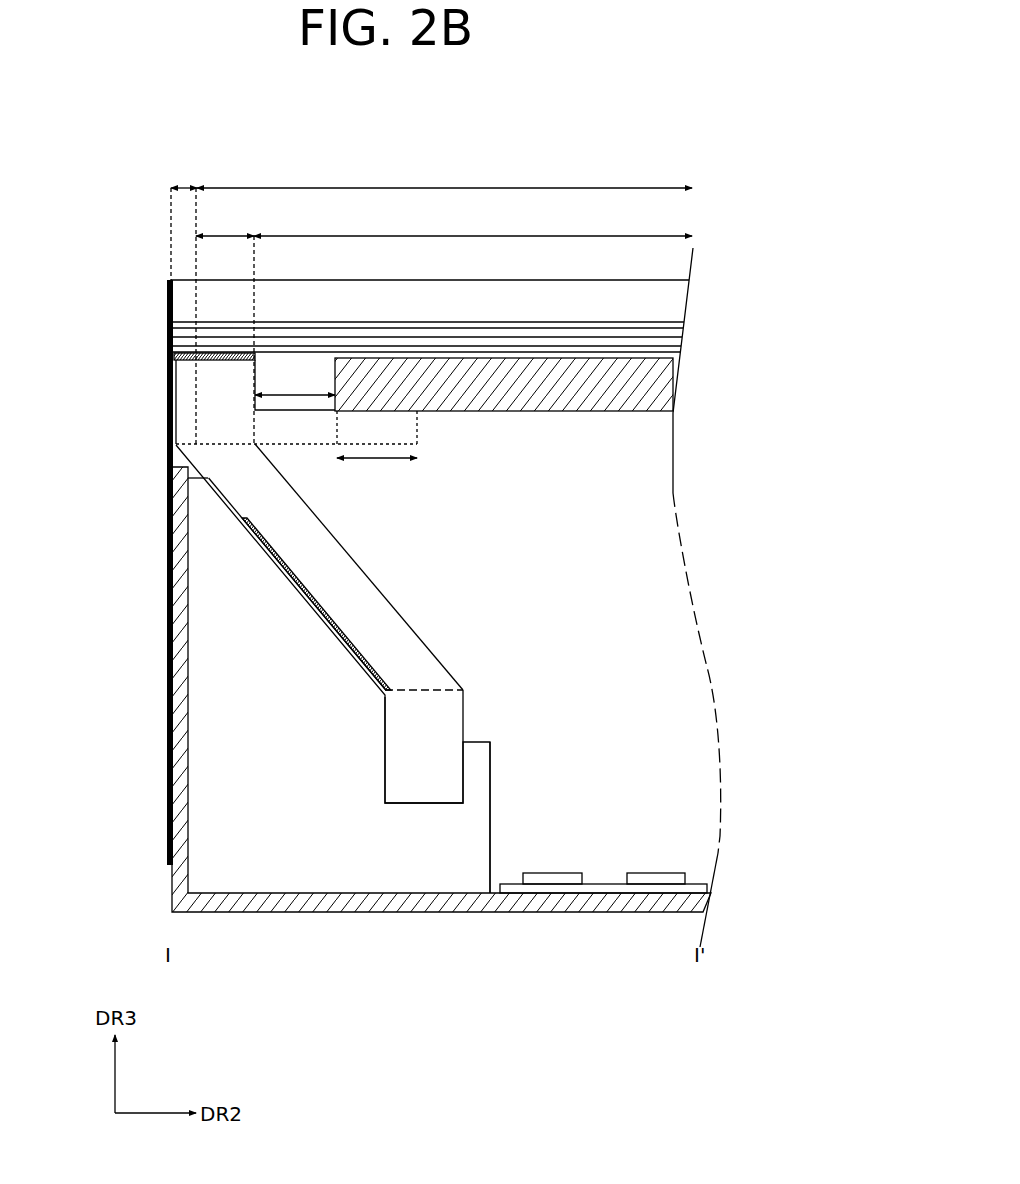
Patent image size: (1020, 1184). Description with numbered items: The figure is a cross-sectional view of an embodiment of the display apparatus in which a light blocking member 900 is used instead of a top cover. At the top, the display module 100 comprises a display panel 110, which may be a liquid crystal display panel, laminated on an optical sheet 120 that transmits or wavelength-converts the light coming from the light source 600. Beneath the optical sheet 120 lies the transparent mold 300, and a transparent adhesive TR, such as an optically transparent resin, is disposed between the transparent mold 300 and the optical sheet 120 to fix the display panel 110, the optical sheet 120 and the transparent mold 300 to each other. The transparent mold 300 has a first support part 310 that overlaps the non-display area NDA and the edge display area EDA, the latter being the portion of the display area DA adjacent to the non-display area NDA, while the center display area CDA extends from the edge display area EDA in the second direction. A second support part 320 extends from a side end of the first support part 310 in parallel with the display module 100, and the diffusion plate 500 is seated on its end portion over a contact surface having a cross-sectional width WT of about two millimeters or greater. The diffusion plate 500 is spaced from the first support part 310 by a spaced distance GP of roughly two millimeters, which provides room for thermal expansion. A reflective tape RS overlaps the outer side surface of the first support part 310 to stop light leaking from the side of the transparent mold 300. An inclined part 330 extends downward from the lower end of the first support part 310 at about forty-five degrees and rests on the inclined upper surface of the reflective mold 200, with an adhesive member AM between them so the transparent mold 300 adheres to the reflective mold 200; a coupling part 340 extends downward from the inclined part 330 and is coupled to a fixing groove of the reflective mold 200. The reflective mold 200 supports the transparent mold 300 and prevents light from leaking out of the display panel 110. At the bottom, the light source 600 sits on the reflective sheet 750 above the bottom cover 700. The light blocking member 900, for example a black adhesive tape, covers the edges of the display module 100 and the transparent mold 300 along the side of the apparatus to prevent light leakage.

The display module 100 is at (472, 321).
The display panel 110 is at (690, 302).
The optical sheet 120 is at (445, 343).
The transparent adhesive TR is at (167, 335).
The reflective tape RS is at (168, 362).
The diffusion plate 500 is at (672, 385).
The light blocking member 900 is at (165, 298).
The transparent mold 300 is at (90, 380).
The first support part 310 is at (185, 395).
The second support part 320 is at (265, 427).
The inclined part 330 is at (232, 490).
The adhesive member AM is at (307, 593).
The coupling part 340 is at (400, 742).
The reflective mold 200 is at (200, 790).
The bottom cover 700 is at (180, 876).
The reflective sheet 750 is at (612, 893).
The light source 600 is at (550, 884).
The non-display area NDA is at (186, 219).
The display area DA is at (444, 301).
The edge display area EDA is at (225, 325).
The center display area CDA is at (473, 221).
The spaced distance GP is at (295, 382).
The cross-sectional width WT is at (377, 472).